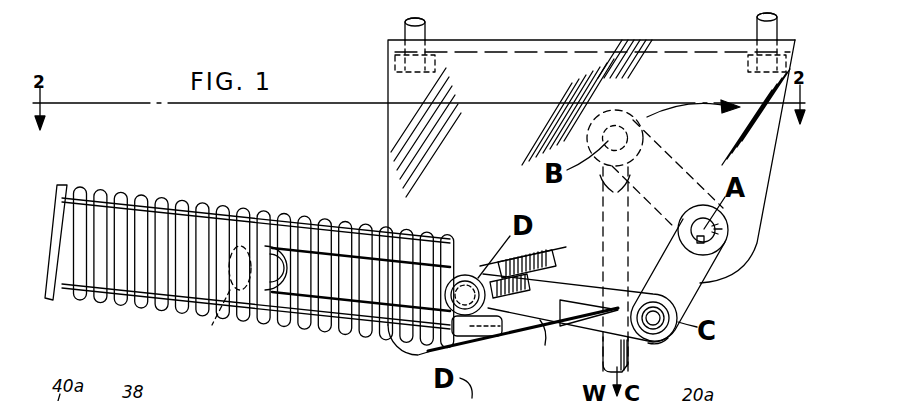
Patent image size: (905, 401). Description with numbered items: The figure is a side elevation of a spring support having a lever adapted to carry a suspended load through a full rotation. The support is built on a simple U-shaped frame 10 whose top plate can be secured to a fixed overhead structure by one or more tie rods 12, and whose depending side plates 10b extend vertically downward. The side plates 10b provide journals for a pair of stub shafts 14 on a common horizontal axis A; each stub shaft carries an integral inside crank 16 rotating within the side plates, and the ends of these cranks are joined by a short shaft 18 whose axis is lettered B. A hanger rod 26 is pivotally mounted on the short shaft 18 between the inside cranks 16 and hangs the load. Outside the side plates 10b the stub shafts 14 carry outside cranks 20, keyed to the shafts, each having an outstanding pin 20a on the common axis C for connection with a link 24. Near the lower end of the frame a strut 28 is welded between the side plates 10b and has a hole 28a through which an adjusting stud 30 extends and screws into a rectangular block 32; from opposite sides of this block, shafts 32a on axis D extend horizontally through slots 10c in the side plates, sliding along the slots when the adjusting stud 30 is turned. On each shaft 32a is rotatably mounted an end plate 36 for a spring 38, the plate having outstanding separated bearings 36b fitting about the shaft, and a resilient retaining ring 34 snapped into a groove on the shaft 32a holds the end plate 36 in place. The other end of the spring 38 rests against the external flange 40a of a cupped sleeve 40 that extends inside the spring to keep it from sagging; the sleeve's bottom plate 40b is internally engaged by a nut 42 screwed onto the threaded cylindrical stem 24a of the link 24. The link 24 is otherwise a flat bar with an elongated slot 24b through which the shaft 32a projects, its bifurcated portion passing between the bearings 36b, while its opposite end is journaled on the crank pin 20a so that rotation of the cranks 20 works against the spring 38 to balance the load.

The U-shaped frame 10 is at (388, 129).
The side plate 10b is at (753, 176).
The slot 10c is at (615, 196).
The tie rod 12 is at (404, 28).
The stub shaft 14 is at (720, 240).
The crank 16 is at (684, 143).
The short shaft 18 is at (611, 110).
The outside crank 20 is at (697, 289).
The pin 20a is at (656, 341).
The link 24 is at (600, 345).
The threaded cylindrical stem 24a is at (200, 313).
The elongated slot 24b is at (548, 318).
The hanger rod 26 is at (630, 367).
The strut 28 is at (388, 250).
The hole 28a is at (430, 260).
The adjusting stud 30 is at (556, 264).
The rectangular block 32 is at (493, 340).
The shaft 32a is at (468, 316).
The resilient retaining ring 34 is at (468, 288).
The end plate 36 is at (447, 400).
The bearing 36b is at (510, 258).
The spring 38 is at (220, 207).
The cupped sleeve 40 is at (165, 213).
The external flange 40a is at (60, 185).
The bottom plate 40b is at (264, 330).
The nut 42 is at (236, 318).